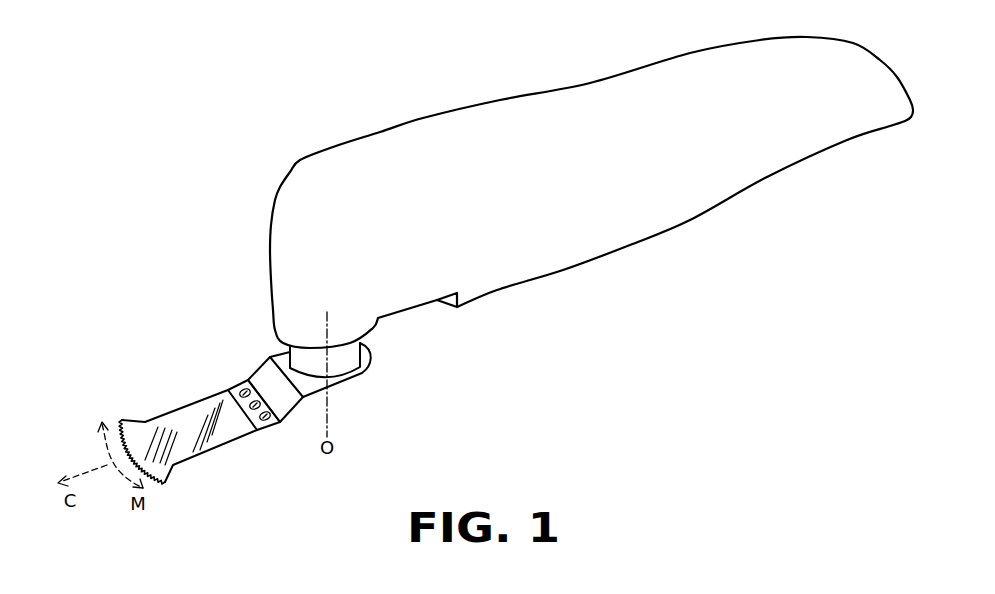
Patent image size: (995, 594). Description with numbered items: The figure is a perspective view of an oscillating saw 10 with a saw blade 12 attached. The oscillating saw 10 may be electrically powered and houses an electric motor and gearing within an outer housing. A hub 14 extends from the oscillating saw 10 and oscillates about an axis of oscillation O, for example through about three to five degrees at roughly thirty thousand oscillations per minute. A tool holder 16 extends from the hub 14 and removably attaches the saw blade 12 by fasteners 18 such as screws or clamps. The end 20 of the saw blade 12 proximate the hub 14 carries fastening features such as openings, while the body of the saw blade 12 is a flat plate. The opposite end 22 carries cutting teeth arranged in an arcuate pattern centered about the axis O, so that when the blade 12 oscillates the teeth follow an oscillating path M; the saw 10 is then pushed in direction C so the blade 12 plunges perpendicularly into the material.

The oscillating saw 10 is at (293, 230).
The saw blade 12 is at (215, 438).
The hub 14 is at (358, 356).
The tool holder 16 is at (263, 373).
The fasteners 18 is at (268, 420).
The end of the saw blade proximate the hub 20 is at (217, 391).
The end of the saw blade opposite the fastening feature 22 is at (167, 488).